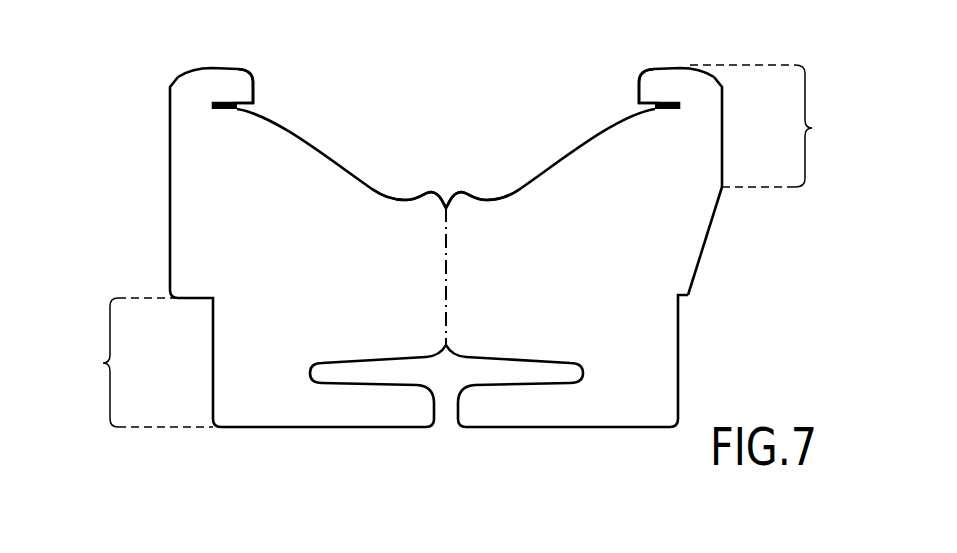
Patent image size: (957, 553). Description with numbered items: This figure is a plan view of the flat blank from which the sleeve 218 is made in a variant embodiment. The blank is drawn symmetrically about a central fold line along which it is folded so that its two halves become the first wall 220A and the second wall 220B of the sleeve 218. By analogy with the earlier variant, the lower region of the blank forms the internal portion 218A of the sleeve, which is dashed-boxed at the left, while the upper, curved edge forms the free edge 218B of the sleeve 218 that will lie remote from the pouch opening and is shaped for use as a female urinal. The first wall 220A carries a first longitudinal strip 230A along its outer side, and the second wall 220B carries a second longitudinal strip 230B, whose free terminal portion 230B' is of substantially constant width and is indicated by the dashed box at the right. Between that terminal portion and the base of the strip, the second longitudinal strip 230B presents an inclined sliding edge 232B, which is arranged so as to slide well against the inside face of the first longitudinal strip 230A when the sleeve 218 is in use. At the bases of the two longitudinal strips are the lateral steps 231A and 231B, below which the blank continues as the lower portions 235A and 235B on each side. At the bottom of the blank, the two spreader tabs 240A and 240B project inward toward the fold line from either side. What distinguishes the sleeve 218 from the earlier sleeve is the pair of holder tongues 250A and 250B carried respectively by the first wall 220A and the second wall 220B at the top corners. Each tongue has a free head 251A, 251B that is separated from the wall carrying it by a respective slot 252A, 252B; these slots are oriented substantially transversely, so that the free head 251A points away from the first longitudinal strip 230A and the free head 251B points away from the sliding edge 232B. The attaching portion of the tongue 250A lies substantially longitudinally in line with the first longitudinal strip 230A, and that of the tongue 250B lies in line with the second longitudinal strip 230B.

The sleeve 218 is at (125, 243).
The internal portion of the sleeve 218A is at (127, 362).
The free edge of the sleeve 218B is at (531, 186).
The first wall 220A is at (341, 272).
The second wall 220B is at (580, 272).
The first longitudinal strip 230A is at (180, 137).
The second longitudinal strip 230B is at (749, 132).
The free terminal portion of the second longitudinal strip 230B' is at (782, 126).
The first lateral step 231A is at (206, 300).
The second lateral step 231B is at (684, 298).
The sliding edge 232B is at (706, 242).
The first lower leg 235A is at (213, 356).
The second lower leg 235B is at (680, 353).
The first spreader tab 240A is at (388, 405).
The second spreader tab 240B is at (512, 405).
The first holder tongue 250A is at (212, 85).
The second holder tongue 250B is at (676, 85).
The free head of the first tongue 251A is at (243, 82).
The free head of the second tongue 251B is at (647, 82).
The first slot 252A is at (232, 110).
The second slot 252B is at (660, 110).